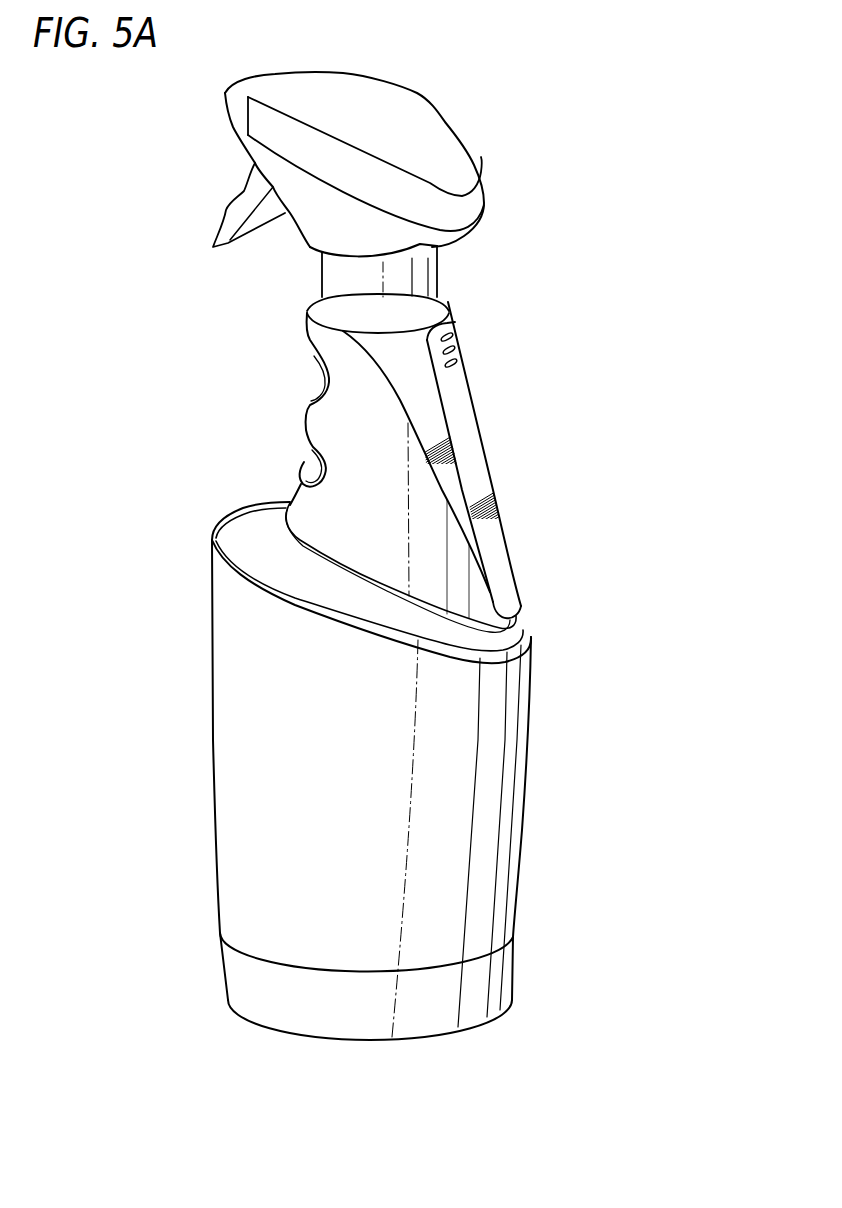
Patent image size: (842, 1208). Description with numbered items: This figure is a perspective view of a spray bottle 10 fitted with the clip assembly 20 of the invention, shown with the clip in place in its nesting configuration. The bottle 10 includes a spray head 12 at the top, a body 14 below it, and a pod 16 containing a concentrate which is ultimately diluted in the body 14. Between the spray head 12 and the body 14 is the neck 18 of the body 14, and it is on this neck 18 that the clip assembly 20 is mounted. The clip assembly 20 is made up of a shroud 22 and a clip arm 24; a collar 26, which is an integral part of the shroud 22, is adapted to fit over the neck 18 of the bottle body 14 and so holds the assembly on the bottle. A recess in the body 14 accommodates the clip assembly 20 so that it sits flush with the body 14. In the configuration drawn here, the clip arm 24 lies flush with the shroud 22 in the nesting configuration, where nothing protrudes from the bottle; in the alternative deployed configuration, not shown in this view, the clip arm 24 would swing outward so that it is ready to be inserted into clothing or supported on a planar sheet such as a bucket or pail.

The spray bottle 10 is at (606, 773).
The spray head 12 is at (438, 140).
The body 14 is at (525, 803).
The pod 16 is at (513, 958).
The neck 18 is at (437, 262).
The clip assembly 20 is at (298, 359).
The shroud 22 is at (408, 378).
The clip arm 24 is at (458, 381).
The collar 26 is at (455, 349).